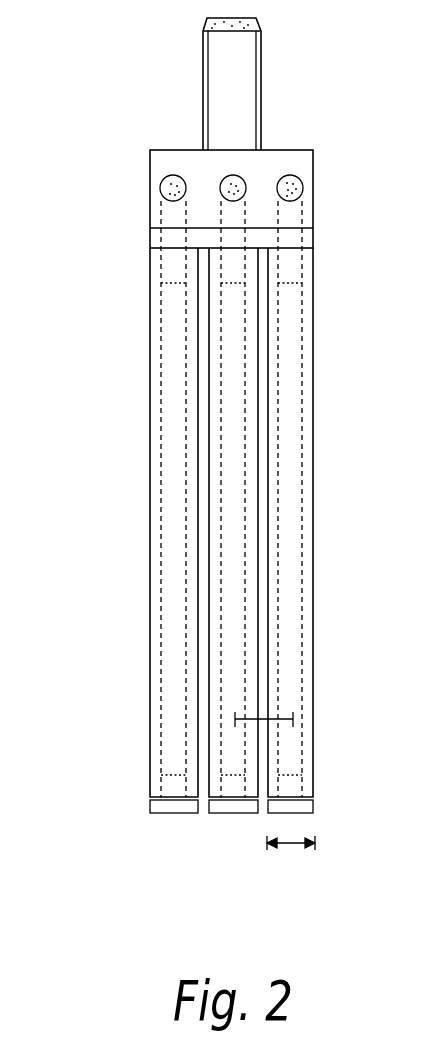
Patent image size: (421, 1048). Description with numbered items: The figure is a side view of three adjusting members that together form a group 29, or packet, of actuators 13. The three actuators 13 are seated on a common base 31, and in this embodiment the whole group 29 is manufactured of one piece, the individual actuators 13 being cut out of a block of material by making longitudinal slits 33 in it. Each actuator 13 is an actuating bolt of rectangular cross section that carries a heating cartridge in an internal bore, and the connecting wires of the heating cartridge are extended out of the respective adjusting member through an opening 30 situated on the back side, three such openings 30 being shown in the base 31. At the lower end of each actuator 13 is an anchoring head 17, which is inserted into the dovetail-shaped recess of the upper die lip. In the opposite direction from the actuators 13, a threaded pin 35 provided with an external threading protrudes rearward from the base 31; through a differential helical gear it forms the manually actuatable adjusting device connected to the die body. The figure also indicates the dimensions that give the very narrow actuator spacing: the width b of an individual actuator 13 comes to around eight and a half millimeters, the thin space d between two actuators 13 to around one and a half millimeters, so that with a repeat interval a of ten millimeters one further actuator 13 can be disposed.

The threaded pin 35 is at (221, 51).
The base 31 is at (176, 160).
The opening 30 is at (168, 190).
The group 29 is at (105, 419).
The actuator 13 is at (270, 560).
The anchoring head 17 is at (120, 796).
The longitudinal slit 33 is at (262, 790).
The space between two actuators d is at (206, 671).
The repeat interval a is at (292, 714).
The width of actuator b is at (296, 843).